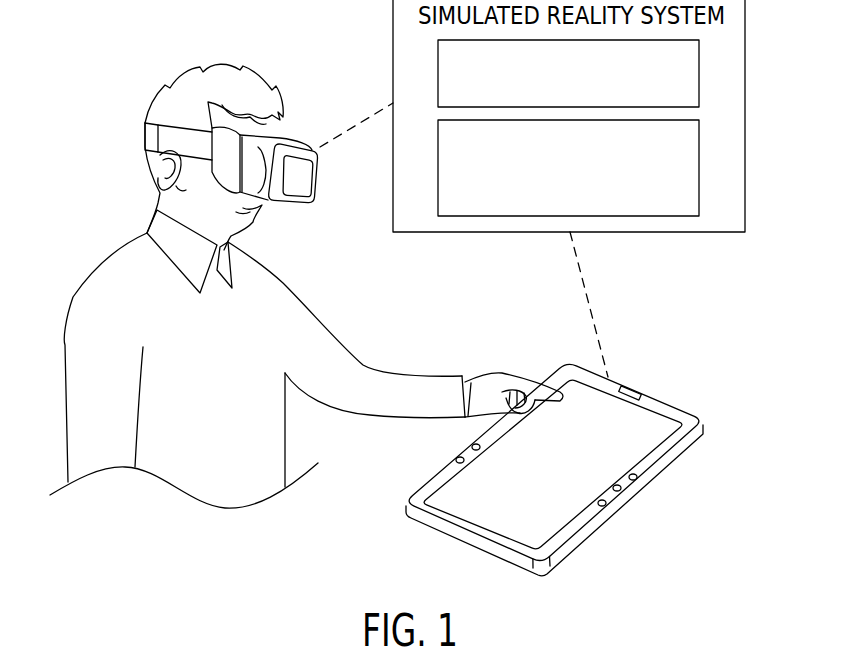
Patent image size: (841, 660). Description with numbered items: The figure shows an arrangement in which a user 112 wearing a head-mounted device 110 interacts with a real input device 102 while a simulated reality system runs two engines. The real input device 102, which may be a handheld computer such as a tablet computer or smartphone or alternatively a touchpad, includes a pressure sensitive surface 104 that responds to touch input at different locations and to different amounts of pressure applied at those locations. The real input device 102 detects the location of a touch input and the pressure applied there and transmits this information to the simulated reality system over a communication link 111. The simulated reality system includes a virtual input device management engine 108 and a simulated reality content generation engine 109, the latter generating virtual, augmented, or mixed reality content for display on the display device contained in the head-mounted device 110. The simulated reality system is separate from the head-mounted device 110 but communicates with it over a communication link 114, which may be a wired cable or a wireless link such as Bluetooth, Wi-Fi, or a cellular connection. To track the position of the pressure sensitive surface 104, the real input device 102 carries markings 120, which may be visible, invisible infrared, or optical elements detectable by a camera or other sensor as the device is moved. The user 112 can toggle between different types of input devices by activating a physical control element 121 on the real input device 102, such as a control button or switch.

The real input device 102 is at (457, 476).
The pressure sensitive surface 104 is at (500, 513).
The virtual input device management engine 108 is at (699, 72).
The simulated reality content generation engine 109 is at (699, 165).
The head-mounted device 110 is at (292, 213).
The communication link 111 is at (588, 299).
The user 112 is at (108, 221).
The communication link 114 is at (352, 128).
The markings 120 is at (472, 445).
The physical control element 121 is at (632, 388).